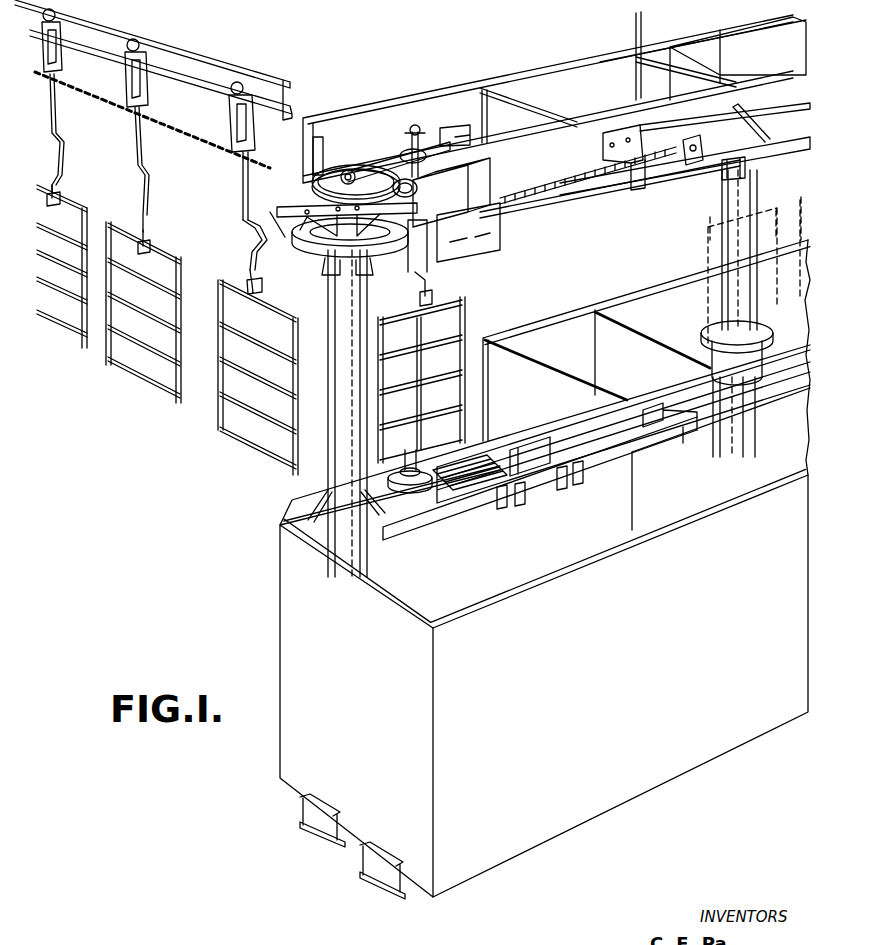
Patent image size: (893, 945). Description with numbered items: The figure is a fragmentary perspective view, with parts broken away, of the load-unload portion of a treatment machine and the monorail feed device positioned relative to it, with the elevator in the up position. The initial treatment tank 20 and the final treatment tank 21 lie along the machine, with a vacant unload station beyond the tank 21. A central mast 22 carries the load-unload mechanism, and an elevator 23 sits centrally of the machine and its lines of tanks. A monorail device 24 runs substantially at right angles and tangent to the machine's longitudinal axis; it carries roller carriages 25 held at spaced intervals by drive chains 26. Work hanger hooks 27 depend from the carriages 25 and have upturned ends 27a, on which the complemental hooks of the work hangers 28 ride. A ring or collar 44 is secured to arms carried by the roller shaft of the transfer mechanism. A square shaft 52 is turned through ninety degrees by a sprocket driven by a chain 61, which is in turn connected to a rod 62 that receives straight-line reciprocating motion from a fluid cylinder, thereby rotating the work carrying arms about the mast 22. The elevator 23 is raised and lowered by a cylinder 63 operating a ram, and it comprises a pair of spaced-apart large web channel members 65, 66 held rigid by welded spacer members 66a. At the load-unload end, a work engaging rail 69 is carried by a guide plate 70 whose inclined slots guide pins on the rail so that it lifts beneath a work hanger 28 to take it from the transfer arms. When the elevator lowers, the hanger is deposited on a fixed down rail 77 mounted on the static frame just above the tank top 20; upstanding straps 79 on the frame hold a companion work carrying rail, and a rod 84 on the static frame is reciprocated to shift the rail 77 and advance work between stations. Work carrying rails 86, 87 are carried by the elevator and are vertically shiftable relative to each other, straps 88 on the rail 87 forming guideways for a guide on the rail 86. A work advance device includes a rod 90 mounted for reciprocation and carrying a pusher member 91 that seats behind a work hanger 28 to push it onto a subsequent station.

The initial treatment tank 20 is at (626, 687).
The final treatment tank 21 is at (566, 354).
The mast 22 is at (296, 488).
The elevator 23 is at (533, 57).
The monorail device 24 is at (192, 48).
The roller carriages 25 is at (128, 84).
The drive chains 26 is at (176, 140).
The work hanger hooks 27 is at (134, 153).
The upturned ends 27a is at (247, 234).
The work hangers 28 is at (426, 264).
The ring or collar 44 is at (738, 240).
The square shaft 52 is at (410, 320).
The chain 61 is at (567, 187).
The rod 62 is at (680, 152).
The cylinder 63 is at (716, 366).
The web channel member 65 is at (398, 115).
The web channel member 66 is at (508, 212).
The spacer members 66a is at (520, 118).
The work engaging rail 69 is at (405, 243).
The guide plate 70 is at (470, 240).
The fixed down rail 77 is at (440, 517).
The upstanding straps 79 is at (522, 496).
The rod 84 is at (576, 440).
The work carrying rail 86 is at (772, 157).
The work carrying rail 87 is at (702, 160).
The straps 88 is at (738, 176).
The rod 90 is at (790, 110).
The pusher member 91 is at (733, 106).